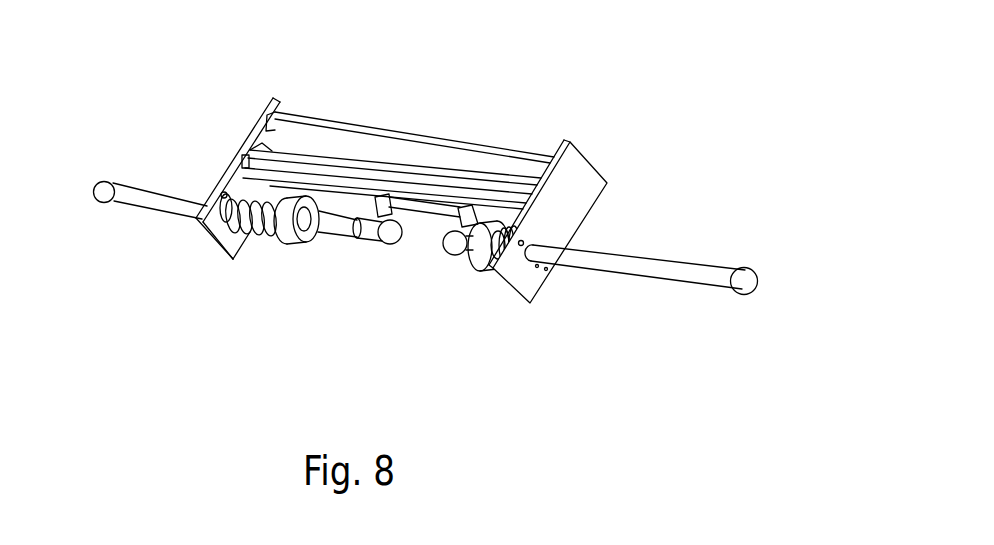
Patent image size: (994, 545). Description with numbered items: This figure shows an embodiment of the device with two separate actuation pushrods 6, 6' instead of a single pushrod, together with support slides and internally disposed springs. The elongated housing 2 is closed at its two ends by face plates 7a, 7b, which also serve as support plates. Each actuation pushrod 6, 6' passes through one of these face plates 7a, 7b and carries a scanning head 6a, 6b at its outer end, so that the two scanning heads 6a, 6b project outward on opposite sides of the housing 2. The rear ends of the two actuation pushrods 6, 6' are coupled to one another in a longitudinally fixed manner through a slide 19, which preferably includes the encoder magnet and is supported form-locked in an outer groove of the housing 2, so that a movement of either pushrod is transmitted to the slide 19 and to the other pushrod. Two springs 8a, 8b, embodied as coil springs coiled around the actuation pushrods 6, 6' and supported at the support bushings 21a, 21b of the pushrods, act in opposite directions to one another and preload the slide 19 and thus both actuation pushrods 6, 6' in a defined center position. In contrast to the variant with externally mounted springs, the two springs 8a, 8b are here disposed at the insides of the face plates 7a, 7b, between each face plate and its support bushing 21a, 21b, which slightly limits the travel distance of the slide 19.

The housing 2 is at (482, 135).
The slide 19 is at (433, 192).
The actuation pushrod 6 is at (133, 265).
The actuation pushrod 6' is at (635, 331).
The scanning head 6a is at (102, 170).
The scanning head 6b is at (748, 303).
The face plate 7a is at (262, 92).
The face plate 7b is at (602, 170).
The spring 8a is at (252, 236).
The spring 8b is at (515, 290).
The support bushing 21a is at (287, 243).
The support bushing 21b is at (483, 269).